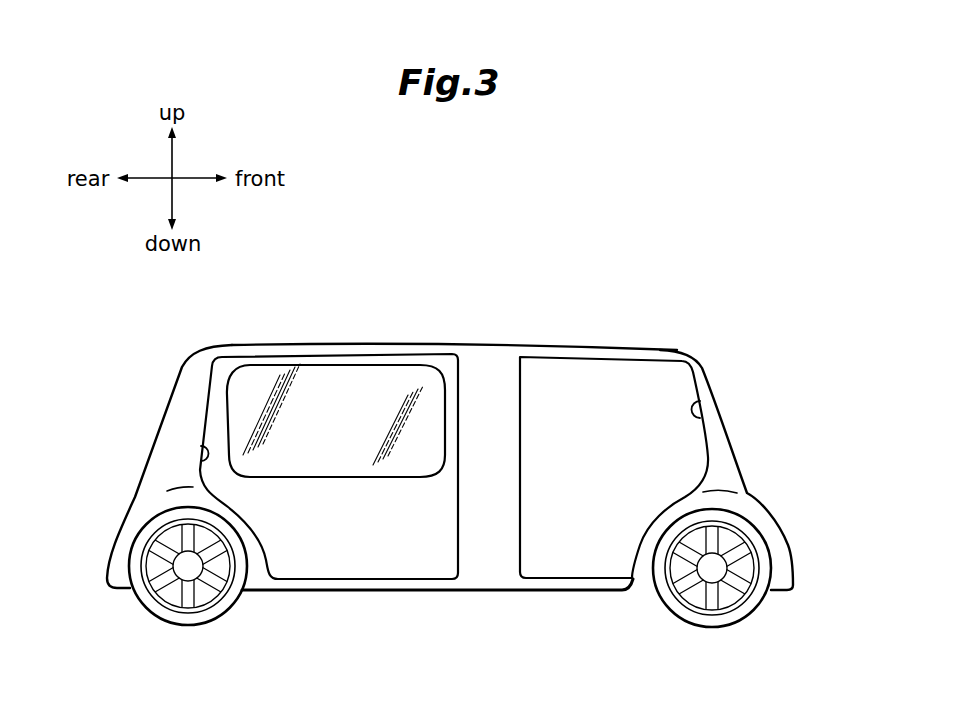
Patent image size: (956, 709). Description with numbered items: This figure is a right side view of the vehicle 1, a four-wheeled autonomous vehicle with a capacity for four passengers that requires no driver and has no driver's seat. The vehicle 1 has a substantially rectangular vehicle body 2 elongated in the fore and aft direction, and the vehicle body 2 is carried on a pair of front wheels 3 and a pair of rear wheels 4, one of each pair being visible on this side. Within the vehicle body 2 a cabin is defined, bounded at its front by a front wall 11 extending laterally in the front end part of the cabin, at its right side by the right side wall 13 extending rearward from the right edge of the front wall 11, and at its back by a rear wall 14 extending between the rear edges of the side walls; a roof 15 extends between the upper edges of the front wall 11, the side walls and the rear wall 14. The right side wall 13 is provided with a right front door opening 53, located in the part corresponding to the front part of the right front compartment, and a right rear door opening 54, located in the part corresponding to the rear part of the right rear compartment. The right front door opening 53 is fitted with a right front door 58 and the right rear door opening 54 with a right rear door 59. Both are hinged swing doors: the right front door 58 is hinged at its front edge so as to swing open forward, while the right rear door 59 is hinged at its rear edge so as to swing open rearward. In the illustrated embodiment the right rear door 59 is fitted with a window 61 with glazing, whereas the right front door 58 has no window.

The vehicle 1 is at (667, 267).
The vehicle body 2 is at (707, 358).
The front wheels 3 is at (728, 618).
The rear wheels 4 is at (207, 613).
The front wall 11 is at (733, 437).
The right side wall 13 is at (485, 550).
The rear wall 14 is at (165, 396).
The roof 15 is at (478, 343).
The right front door opening 53 is at (687, 397).
The right rear door opening 54 is at (201, 446).
The right front door 58 is at (575, 557).
The right rear door 59 is at (363, 557).
The rear door window 61 is at (340, 382).